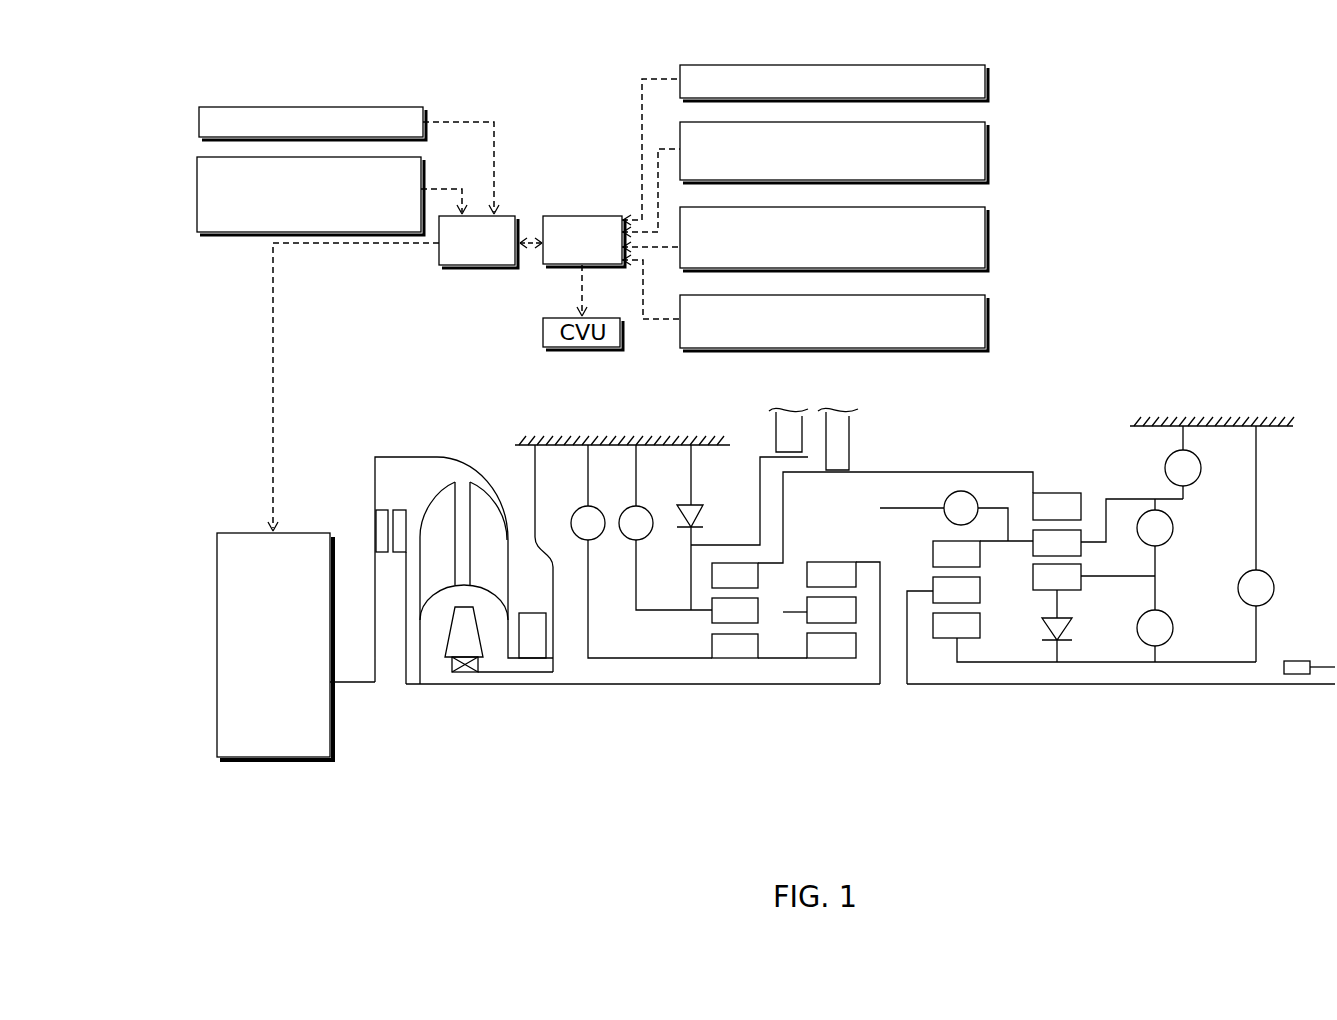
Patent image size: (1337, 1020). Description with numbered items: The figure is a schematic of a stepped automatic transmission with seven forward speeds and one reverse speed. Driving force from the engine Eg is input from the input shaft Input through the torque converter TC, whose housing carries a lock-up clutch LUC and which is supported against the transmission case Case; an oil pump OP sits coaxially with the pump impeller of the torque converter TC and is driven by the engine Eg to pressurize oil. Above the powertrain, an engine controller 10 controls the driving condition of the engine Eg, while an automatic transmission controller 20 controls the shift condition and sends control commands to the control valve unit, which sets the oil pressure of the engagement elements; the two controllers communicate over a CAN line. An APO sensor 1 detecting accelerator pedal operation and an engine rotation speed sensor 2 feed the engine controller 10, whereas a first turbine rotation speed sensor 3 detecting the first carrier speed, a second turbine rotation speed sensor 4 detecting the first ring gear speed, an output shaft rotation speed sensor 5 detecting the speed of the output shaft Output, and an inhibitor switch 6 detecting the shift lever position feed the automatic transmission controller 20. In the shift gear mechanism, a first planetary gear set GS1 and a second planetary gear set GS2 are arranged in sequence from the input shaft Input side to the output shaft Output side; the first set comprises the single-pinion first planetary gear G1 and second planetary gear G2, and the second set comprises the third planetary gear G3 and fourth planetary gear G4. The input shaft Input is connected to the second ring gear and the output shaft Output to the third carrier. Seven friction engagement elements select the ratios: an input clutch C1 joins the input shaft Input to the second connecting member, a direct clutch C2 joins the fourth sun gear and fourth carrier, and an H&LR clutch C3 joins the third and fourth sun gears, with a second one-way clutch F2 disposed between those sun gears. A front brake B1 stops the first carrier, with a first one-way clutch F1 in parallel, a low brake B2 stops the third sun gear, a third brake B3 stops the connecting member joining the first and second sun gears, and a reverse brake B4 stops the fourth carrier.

The APO sensor 1 is at (199, 122).
The engine rotation speed sensor 2 is at (197, 204).
The first turbine rotation speed sensor 3 is at (985, 148).
The second turbine rotation speed sensor 4 is at (985, 235).
The output shaft rotation speed sensor 5 is at (985, 312).
The inhibitor switch 6 is at (985, 76).
The engine controller 10 is at (478, 267).
The automatic transmission controller 20 is at (572, 216).
The engine Eg is at (309, 533).
The torque converter TC is at (453, 446).
The lock-up clutch LUC is at (392, 503).
The oil pump OP is at (532, 613).
The transmission case Case is at (597, 446).
The input shaft Input is at (554, 686).
The output shaft Output is at (1175, 684).
The front brake B1 is at (665, 527).
The low brake B2 is at (1256, 544).
The 2346 brake B3 is at (641, 551).
The reverse brake B4 is at (1183, 462).
The input clutch C1 is at (995, 542).
The direct clutch C2 is at (1155, 554).
The H&LR clutch C3 is at (1155, 636).
The first one-way clutch F1 is at (699, 506).
The second one-way clutch F2 is at (1066, 626).
The first planetary gear G1 is at (698, 613).
The second planetary gear G2 is at (804, 707).
The third planetary gear G3 is at (917, 591).
The fourth planetary gear G4 is at (1094, 543).
The first planetary gear set GS1 is at (708, 744).
The second planetary gear set GS2 is at (935, 744).